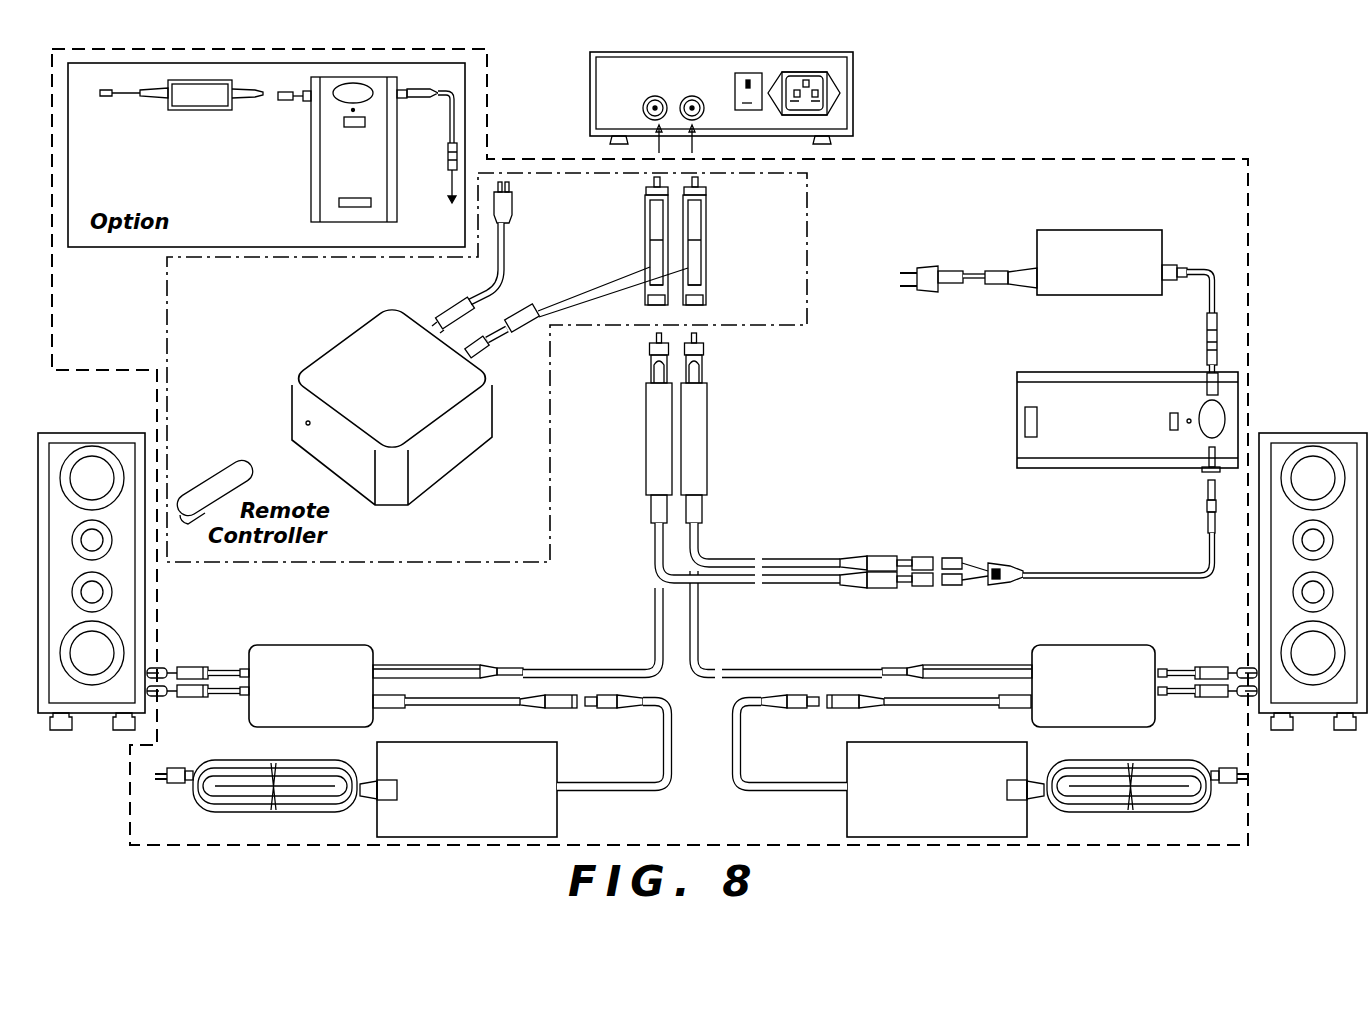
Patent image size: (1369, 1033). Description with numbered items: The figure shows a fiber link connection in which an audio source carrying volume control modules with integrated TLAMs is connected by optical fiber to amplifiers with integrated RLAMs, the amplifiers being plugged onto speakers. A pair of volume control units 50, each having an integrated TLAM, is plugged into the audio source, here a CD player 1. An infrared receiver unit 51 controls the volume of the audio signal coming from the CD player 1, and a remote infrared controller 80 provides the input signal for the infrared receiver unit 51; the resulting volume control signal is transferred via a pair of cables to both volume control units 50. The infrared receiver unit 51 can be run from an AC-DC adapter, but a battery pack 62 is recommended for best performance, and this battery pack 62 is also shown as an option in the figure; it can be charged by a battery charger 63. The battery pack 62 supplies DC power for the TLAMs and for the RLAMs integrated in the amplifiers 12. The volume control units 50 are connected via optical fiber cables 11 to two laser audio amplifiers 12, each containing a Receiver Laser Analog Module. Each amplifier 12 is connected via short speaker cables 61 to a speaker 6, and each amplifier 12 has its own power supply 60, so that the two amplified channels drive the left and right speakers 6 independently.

The CD player 1 is at (795, 60).
The speaker 6 is at (63, 432).
The optical fiber cable 11 is at (655, 638).
The laser audio amplifier 12 is at (280, 645).
The volume control unit 50 is at (645, 240).
The infrared receiver unit 51 is at (460, 450).
The power supply 60 is at (557, 823).
The speaker cable 61 is at (223, 667).
The battery pack 62 is at (311, 163).
The battery charger 63 is at (200, 110).
The remote infrared controller 80 is at (203, 480).